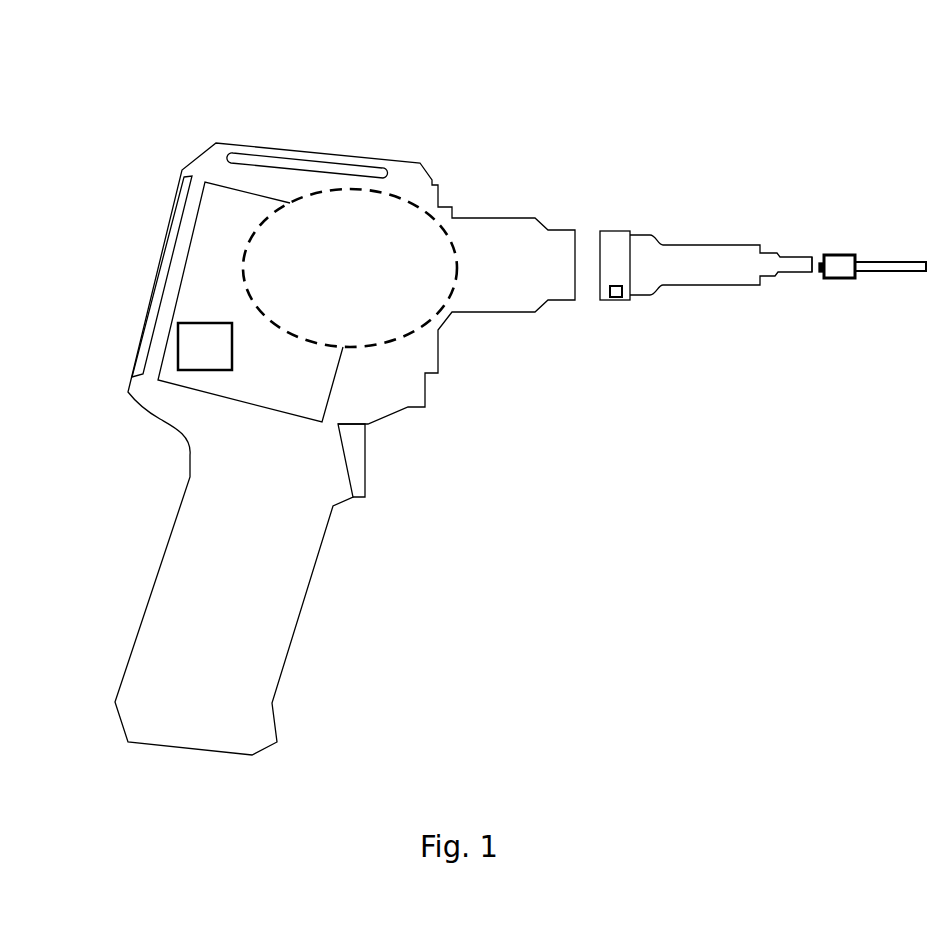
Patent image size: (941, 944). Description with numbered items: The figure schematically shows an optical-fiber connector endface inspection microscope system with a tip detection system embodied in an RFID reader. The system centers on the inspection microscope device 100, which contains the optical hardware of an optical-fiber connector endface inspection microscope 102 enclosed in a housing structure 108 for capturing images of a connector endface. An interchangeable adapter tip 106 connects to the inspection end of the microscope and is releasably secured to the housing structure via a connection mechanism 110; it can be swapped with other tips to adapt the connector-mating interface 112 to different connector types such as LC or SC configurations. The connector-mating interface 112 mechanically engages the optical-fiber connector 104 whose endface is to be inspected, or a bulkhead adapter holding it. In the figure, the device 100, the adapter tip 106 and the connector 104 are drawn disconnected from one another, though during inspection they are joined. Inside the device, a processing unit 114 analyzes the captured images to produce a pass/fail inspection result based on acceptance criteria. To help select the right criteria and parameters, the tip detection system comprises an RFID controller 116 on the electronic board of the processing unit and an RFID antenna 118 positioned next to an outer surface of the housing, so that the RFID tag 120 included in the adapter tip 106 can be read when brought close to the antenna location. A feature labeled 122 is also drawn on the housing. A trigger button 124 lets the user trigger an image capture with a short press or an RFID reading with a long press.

The inspection microscope device 100 is at (523, 129).
The optical-fiber connector endface inspection microscope 102 is at (368, 327).
The optical-fiber connector 104 is at (820, 257).
The interchangeable adapter tip 106 is at (718, 245).
The housing structure 108 is at (193, 158).
The connection mechanism 110 is at (608, 300).
The connector-mating interface 112 is at (800, 277).
The processing unit 114 is at (313, 400).
The RFID controller 116 is at (222, 360).
The RFID antenna 118 is at (340, 170).
The RFID tag 120 is at (620, 299).
The grip strip 122 is at (162, 257).
The trigger button 124 is at (365, 468).